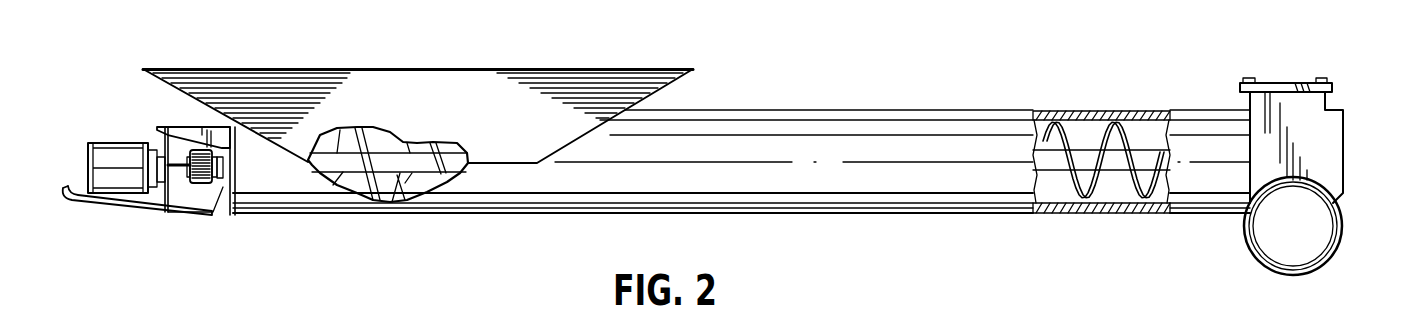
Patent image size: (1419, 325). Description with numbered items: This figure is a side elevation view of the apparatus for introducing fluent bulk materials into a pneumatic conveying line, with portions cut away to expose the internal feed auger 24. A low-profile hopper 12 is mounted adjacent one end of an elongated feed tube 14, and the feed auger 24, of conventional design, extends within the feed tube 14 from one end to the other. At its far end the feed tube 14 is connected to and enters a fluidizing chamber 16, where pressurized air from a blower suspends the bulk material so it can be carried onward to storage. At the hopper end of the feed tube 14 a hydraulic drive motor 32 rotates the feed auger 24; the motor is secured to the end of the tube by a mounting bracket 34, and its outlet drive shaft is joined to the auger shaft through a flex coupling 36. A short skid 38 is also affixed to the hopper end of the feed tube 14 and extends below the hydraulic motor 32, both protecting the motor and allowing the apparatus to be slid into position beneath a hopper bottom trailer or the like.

The low-profile hopper 12 is at (481, 64).
The feed tube 14 is at (961, 218).
The fluidizing chamber 16 is at (1352, 155).
The feed auger 24 is at (370, 183).
The hydraulic drive motor 32 is at (112, 142).
The mounting bracket 34 is at (178, 126).
The flex coupling 36 is at (203, 186).
The skid 38 is at (140, 217).